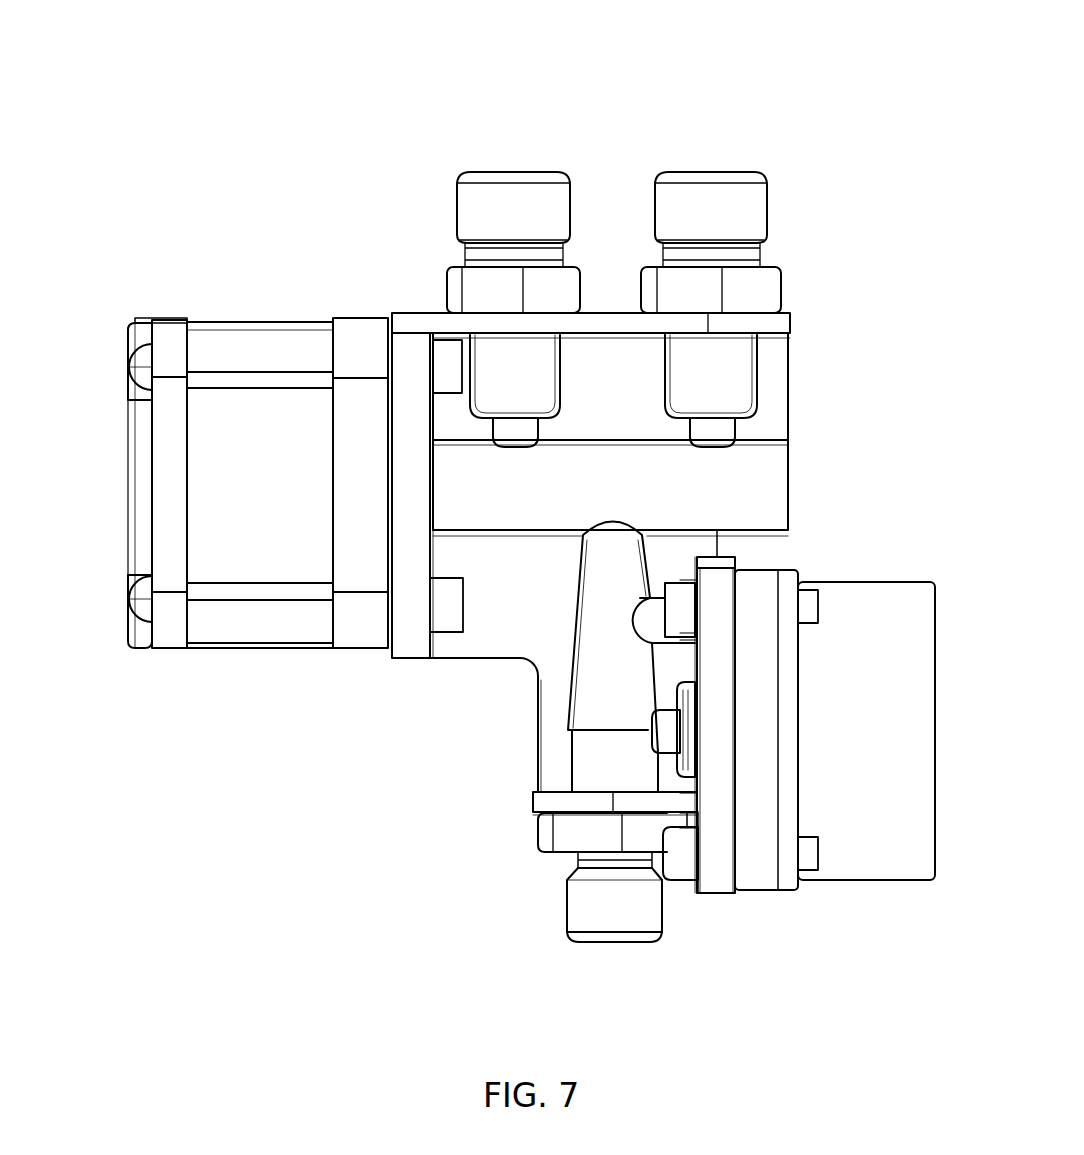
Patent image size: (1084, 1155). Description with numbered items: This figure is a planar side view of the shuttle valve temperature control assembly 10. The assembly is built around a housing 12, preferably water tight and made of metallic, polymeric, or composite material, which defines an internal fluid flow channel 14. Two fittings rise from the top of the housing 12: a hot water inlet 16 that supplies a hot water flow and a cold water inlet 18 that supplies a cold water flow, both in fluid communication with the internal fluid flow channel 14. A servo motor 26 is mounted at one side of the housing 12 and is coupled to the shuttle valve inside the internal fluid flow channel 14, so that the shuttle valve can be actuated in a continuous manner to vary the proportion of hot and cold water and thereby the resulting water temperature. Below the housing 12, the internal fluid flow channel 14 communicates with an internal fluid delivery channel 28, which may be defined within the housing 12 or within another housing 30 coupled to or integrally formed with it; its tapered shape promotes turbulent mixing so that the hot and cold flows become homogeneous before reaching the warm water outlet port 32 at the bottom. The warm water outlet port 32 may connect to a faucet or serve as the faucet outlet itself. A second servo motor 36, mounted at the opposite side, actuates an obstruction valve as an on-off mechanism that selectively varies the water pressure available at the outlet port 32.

The shuttle valve temperature control assembly 10 is at (617, 185).
The housing 12 is at (768, 397).
The internal fluid flow channel 14 is at (768, 487).
The hot water inlet 16 is at (713, 162).
The cold water inlet 18 is at (517, 160).
The servo motor 26 is at (250, 478).
The internal fluid delivery channel 28 is at (588, 713).
The another housing 30 is at (555, 662).
The warm water outlet port 32 is at (668, 903).
The servo motor 36 is at (865, 617).